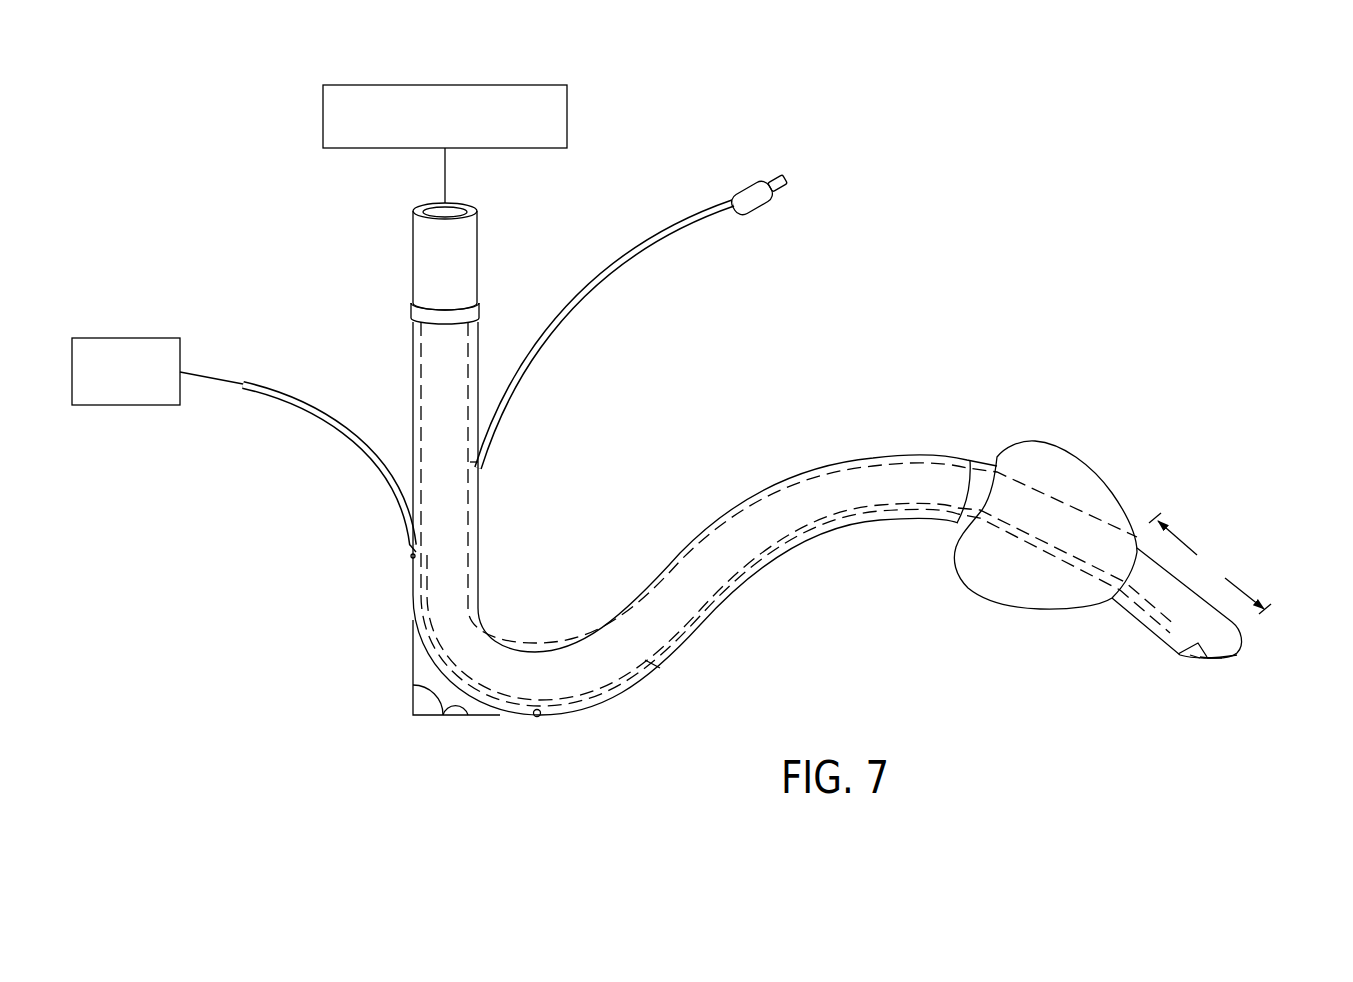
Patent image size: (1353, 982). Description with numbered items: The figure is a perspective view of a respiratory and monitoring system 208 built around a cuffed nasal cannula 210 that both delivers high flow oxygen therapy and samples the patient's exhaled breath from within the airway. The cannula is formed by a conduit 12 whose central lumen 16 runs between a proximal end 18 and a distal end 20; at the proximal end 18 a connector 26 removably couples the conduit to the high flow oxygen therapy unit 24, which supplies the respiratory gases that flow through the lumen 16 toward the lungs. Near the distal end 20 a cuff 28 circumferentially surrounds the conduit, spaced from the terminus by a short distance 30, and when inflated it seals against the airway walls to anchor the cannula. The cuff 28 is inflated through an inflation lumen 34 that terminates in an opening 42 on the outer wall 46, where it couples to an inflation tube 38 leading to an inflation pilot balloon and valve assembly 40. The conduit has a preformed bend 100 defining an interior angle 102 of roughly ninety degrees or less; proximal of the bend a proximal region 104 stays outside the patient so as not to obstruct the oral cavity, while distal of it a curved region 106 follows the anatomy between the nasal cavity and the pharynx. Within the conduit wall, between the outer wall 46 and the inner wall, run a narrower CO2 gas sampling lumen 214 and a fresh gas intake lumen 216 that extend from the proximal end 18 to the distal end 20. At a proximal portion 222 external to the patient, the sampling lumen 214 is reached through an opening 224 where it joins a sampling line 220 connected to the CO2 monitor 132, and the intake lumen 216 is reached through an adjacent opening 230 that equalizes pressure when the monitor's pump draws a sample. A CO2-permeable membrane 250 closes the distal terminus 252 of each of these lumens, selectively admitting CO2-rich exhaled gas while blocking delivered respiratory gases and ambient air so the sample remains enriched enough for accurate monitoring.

The conduit 12 is at (490, 497).
The lumen 16 is at (1216, 668).
The proximal end 18 is at (452, 325).
The distal end 20 is at (1237, 655).
The high flow oxygen therapy unit 24 is at (510, 85).
The connector 26 is at (478, 238).
The cuff 28 is at (1085, 440).
The distance 30 is at (1210, 563).
The inflation lumen 34 is at (740, 510).
The inflation tube 38 is at (680, 228).
The inflation pilot balloon and valve assembly 40 is at (750, 186).
The opening 42 is at (478, 462).
The outer wall 46 is at (657, 660).
The bend 100 is at (583, 730).
The interior angle 102 is at (468, 715).
The proximal region 104 is at (540, 410).
The curved region 106 is at (875, 432).
The CO2 monitor 132 is at (152, 338).
The respiratory and monitoring system 208 is at (218, 97).
The nasal cannula 210 is at (316, 238).
The CO2 gas sampling lumen 214 is at (572, 697).
The fresh gas intake lumen 216 is at (535, 717).
The sampling line 220 is at (300, 404).
The proximal portion 222 is at (260, 467).
The opening 224 is at (404, 548).
The opening 230 is at (411, 560).
The CO2-permeable membrane 250 is at (1182, 650).
The distal terminus 252 is at (1195, 670).